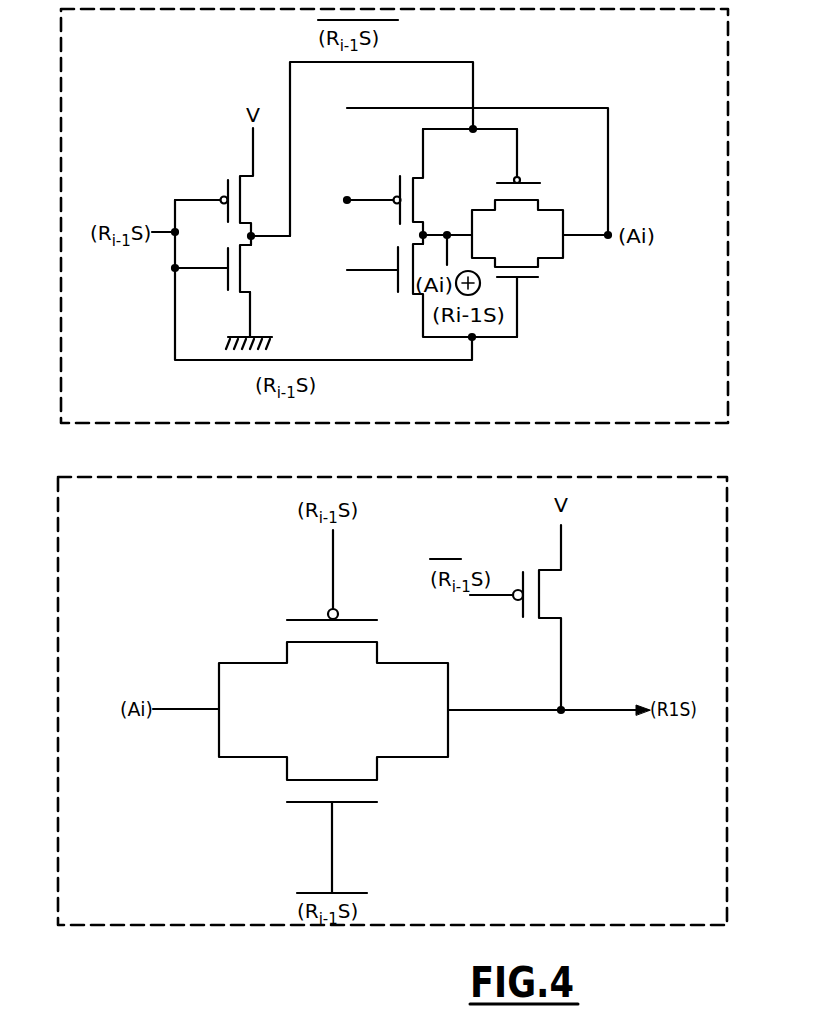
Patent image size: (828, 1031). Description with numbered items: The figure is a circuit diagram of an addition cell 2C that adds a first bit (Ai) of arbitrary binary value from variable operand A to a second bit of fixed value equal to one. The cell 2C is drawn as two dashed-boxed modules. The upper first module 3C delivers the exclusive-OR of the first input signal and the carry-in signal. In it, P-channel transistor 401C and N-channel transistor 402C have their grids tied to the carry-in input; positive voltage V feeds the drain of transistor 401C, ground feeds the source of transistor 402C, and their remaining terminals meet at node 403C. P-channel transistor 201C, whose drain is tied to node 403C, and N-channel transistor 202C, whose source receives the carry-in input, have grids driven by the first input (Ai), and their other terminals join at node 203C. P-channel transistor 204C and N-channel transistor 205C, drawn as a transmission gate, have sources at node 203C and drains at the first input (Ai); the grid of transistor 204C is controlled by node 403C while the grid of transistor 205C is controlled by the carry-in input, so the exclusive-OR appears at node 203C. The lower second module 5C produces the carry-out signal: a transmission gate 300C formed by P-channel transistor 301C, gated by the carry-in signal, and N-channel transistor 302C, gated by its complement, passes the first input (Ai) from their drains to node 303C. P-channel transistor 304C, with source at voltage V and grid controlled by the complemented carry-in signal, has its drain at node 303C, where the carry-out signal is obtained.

The addition cell 2C is at (66, 455).
The first module 3C is at (61, 368).
The second module 5C is at (58, 890).
The P-channel transistor 401C is at (230, 190).
The N-channel transistor 402C is at (228, 292).
The node 403C is at (252, 243).
The P-channel transistor 201C is at (424, 180).
The N-channel transistor 202C is at (398, 288).
The node 203C is at (460, 224).
The P-channel transistor 204C is at (524, 168).
The N-channel transistor 205C is at (538, 277).
The transmission gate 300C is at (446, 805).
The P-channel transistor 301C is at (322, 618).
The N-channel transistor 302C is at (326, 804).
The node 303C is at (561, 713).
The P-channel transistor 304C is at (555, 617).